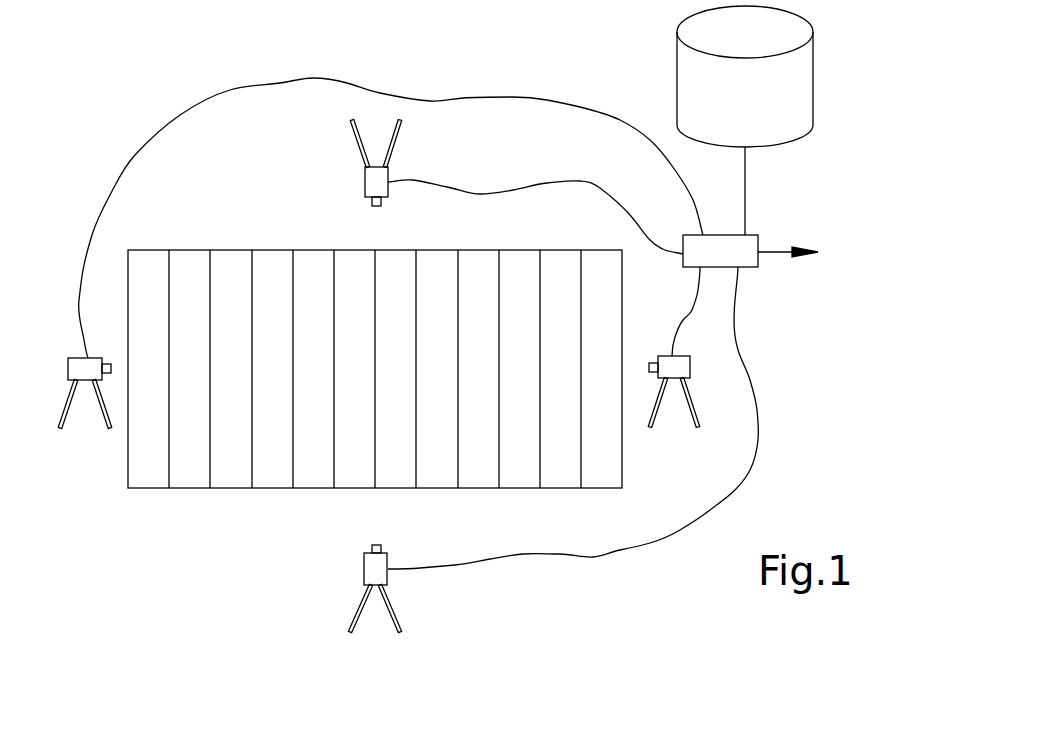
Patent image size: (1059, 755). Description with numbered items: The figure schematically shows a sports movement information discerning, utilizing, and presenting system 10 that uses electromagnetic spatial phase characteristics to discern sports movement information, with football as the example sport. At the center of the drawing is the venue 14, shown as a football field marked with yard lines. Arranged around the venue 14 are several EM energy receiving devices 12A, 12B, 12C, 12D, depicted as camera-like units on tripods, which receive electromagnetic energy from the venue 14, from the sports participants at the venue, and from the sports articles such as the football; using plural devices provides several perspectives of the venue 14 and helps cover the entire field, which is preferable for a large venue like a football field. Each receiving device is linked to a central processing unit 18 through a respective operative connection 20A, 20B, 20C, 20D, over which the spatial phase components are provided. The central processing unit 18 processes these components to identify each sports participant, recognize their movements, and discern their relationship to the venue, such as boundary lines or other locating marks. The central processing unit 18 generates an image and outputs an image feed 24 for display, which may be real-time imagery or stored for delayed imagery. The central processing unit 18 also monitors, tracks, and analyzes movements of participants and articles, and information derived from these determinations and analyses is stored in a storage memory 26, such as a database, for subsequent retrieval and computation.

The sports movement information discerning, utilizing, and presenting system 10 is at (587, 33).
The EM energy receiving device 12A is at (372, 178).
The EM energy receiving device 12B is at (686, 366).
The EM energy receiving device 12C is at (370, 572).
The EM energy receiving device 12D is at (72, 370).
The venue 14 is at (266, 250).
The central processing unit 18 is at (758, 237).
The operative connection 20A is at (484, 193).
The operative connection 20B is at (683, 318).
The operative connection 20C is at (492, 562).
The operative connection 20D is at (484, 97).
The image feed 24 is at (780, 251).
The storage memory 26 is at (803, 66).